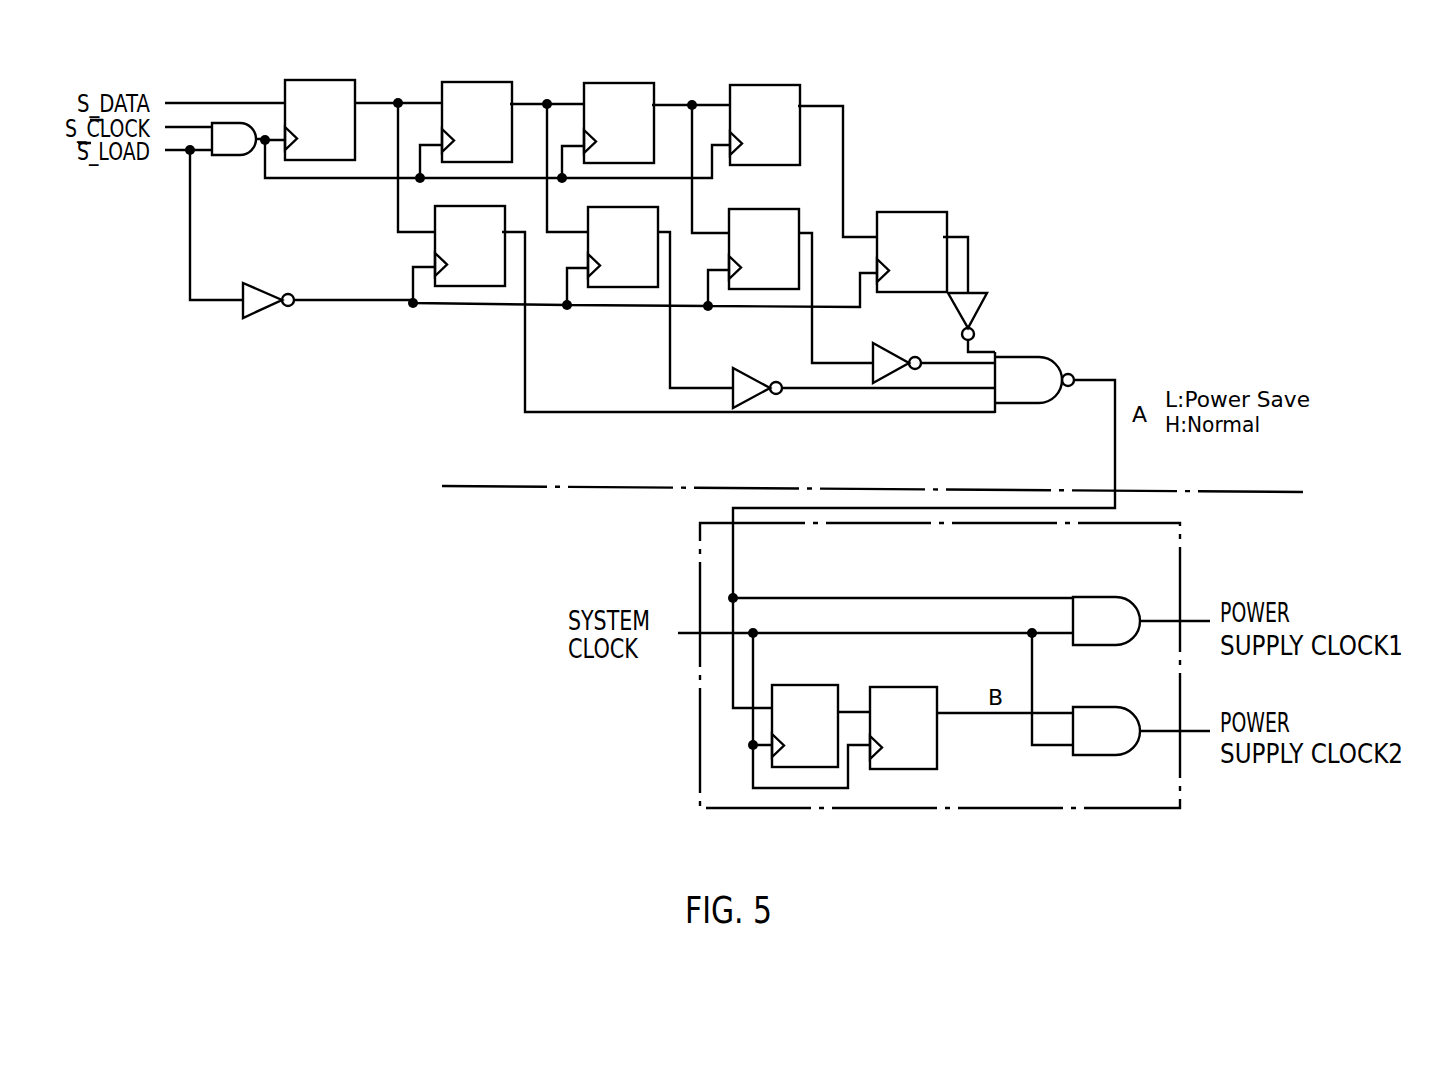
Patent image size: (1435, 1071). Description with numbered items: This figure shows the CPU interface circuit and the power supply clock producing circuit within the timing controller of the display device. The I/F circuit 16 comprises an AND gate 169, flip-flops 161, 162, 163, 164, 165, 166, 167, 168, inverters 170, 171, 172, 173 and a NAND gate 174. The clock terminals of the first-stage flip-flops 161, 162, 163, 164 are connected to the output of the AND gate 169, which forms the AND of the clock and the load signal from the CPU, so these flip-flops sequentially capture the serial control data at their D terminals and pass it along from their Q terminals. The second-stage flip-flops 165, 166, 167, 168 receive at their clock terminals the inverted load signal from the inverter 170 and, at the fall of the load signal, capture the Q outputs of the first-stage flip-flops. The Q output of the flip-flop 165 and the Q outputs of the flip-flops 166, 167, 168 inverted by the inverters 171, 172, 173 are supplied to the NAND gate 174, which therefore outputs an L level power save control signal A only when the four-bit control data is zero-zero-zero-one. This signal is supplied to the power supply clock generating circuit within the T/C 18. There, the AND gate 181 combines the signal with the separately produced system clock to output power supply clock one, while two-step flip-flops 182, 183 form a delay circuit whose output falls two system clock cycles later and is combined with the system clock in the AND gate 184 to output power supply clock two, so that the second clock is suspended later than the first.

The I/F circuit 16 is at (595, 460).
The T/C 18 is at (595, 538).
The flip-flop 161 is at (327, 80).
The flip-flop 162 is at (480, 82).
The flip-flop 163 is at (622, 83).
The flip-flop 164 is at (767, 85).
The flip-flop 165 is at (466, 286).
The flip-flop 166 is at (619, 287).
The flip-flop 167 is at (760, 289).
The flip-flop 168 is at (915, 212).
The AND gate 169 is at (232, 155).
The inverter 170 is at (258, 315).
The inverter 171 is at (746, 406).
The inverter 172 is at (886, 383).
The inverter 173 is at (987, 310).
The NAND gate 174 is at (1012, 403).
The AND gate 181 is at (1095, 597).
The flip-flop 182 is at (808, 685).
The flip-flop 183 is at (906, 687).
The AND gate 184 is at (1095, 707).